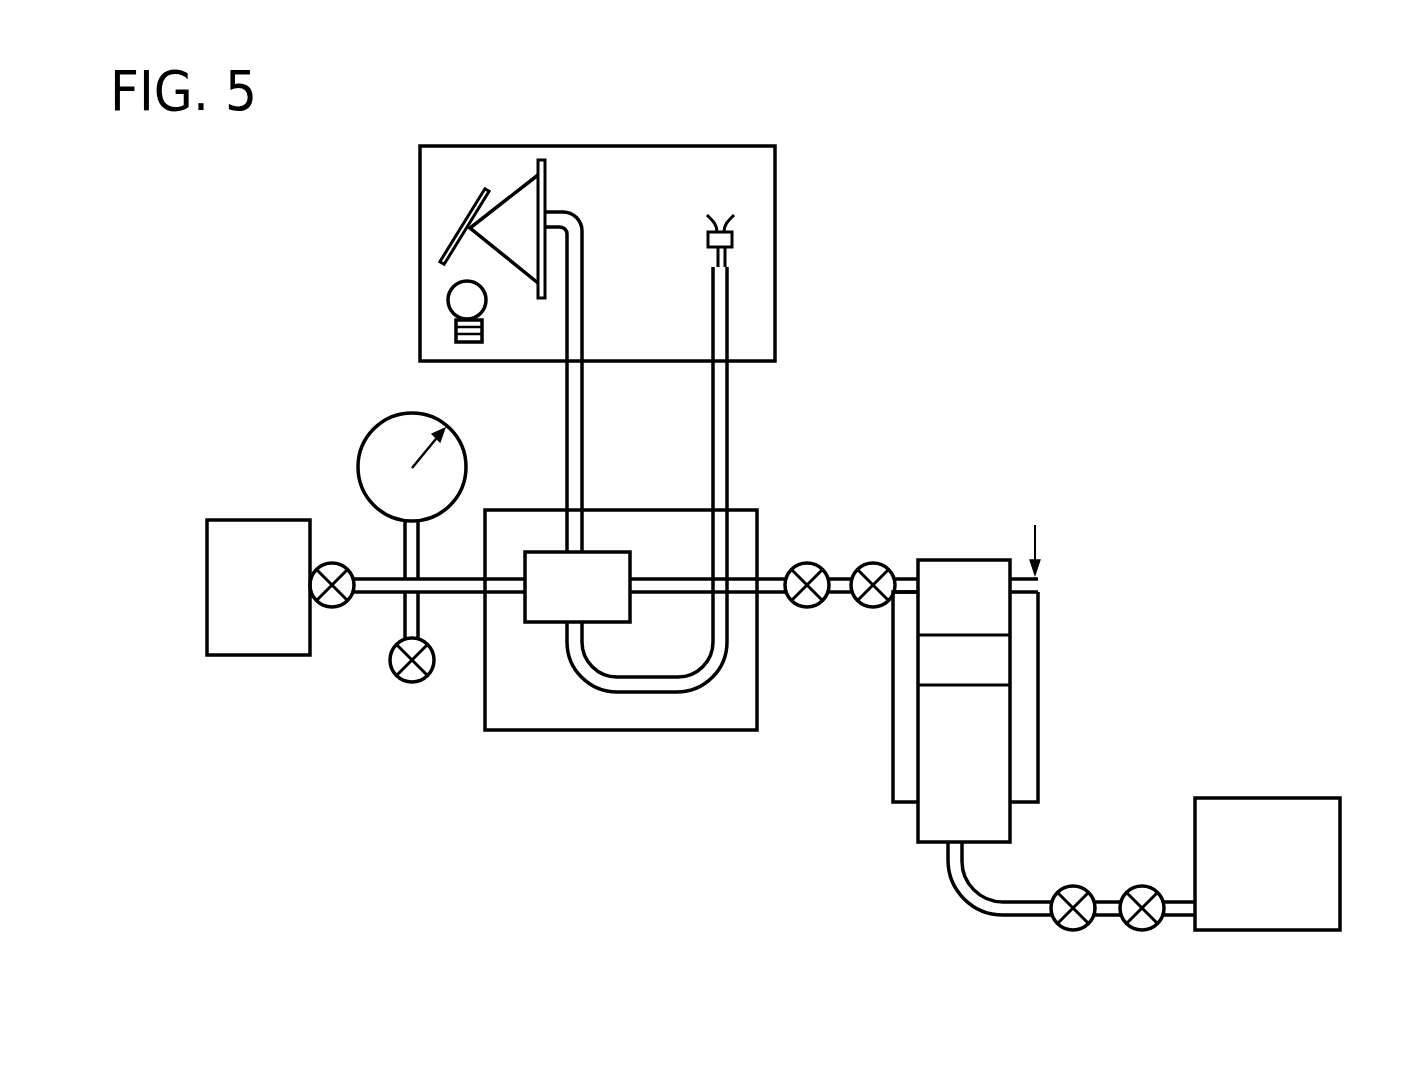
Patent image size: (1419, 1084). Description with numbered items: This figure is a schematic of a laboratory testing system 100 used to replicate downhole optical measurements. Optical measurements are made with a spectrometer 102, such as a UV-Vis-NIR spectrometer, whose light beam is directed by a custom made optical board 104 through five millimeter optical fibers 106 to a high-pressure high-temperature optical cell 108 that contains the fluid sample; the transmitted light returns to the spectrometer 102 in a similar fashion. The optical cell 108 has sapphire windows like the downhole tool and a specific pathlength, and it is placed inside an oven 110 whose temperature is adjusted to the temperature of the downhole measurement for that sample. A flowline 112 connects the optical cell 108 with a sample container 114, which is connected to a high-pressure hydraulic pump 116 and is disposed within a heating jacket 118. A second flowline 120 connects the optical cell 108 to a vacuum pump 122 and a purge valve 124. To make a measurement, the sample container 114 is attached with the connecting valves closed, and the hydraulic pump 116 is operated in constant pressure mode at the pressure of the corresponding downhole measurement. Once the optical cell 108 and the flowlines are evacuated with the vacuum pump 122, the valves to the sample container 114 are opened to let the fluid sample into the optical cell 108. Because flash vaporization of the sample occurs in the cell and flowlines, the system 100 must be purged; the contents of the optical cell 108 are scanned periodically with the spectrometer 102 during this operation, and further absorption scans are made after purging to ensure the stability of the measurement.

The testing system 100 is at (1030, 145).
The spectrometer 102 is at (812, 250).
The optical board 104 is at (547, 160).
The optical fibers 106 is at (730, 407).
The optical cell 108 is at (602, 552).
The oven 110 is at (498, 732).
The flowline 112 is at (843, 597).
The sample container 114 is at (943, 560).
The hydraulic pump 116 is at (1340, 865).
The heating jacket 118 is at (1038, 637).
The second flowline 120 is at (367, 593).
The vacuum pump 122 is at (206, 550).
The purge valve 124 is at (390, 667).